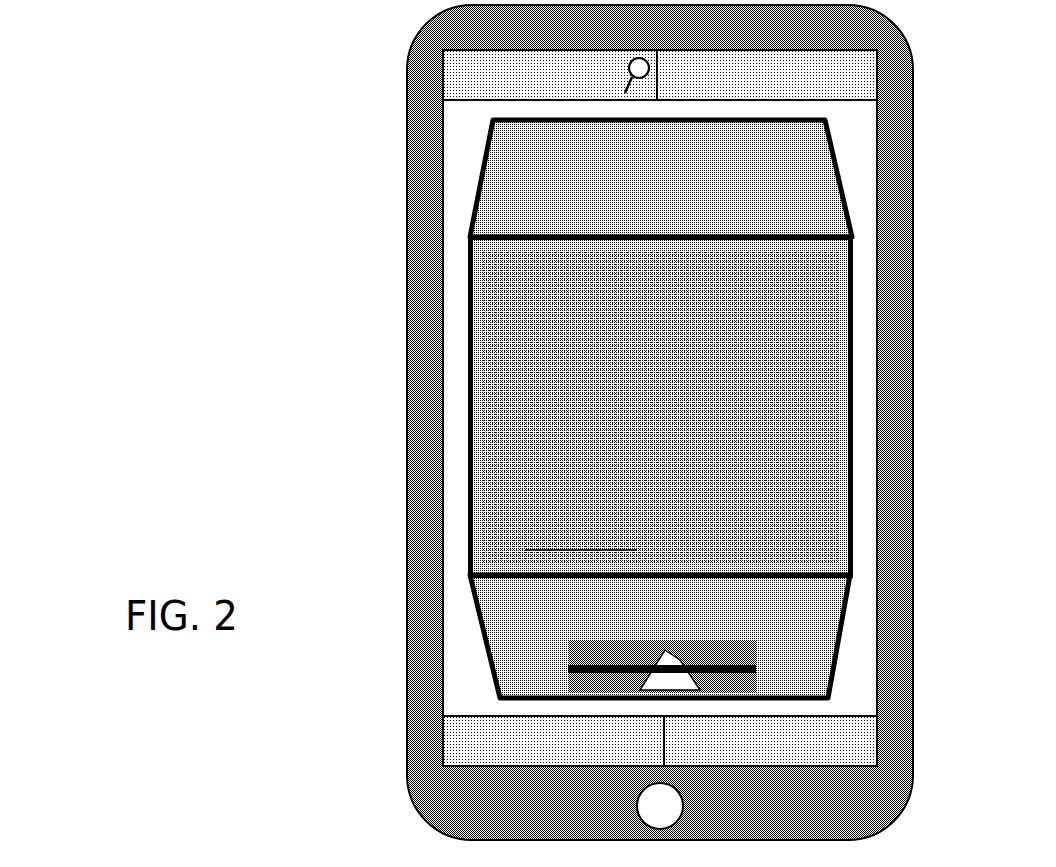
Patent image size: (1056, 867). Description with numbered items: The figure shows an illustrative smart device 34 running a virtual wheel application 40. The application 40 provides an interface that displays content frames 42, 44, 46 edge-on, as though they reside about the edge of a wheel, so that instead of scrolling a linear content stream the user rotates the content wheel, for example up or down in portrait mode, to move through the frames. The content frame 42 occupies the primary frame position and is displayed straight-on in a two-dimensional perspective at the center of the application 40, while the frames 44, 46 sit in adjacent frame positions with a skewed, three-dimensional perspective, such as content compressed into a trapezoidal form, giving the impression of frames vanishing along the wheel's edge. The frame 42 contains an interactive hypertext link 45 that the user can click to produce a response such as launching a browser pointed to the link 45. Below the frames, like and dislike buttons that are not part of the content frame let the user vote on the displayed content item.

The virtual wheel application 40 is at (372, 122).
The smart device 34 is at (903, 575).
The content frame 44 is at (850, 160).
The content frame 42 is at (470, 322).
The hypertext link 45 is at (537, 533).
The content frame 46 is at (843, 684).